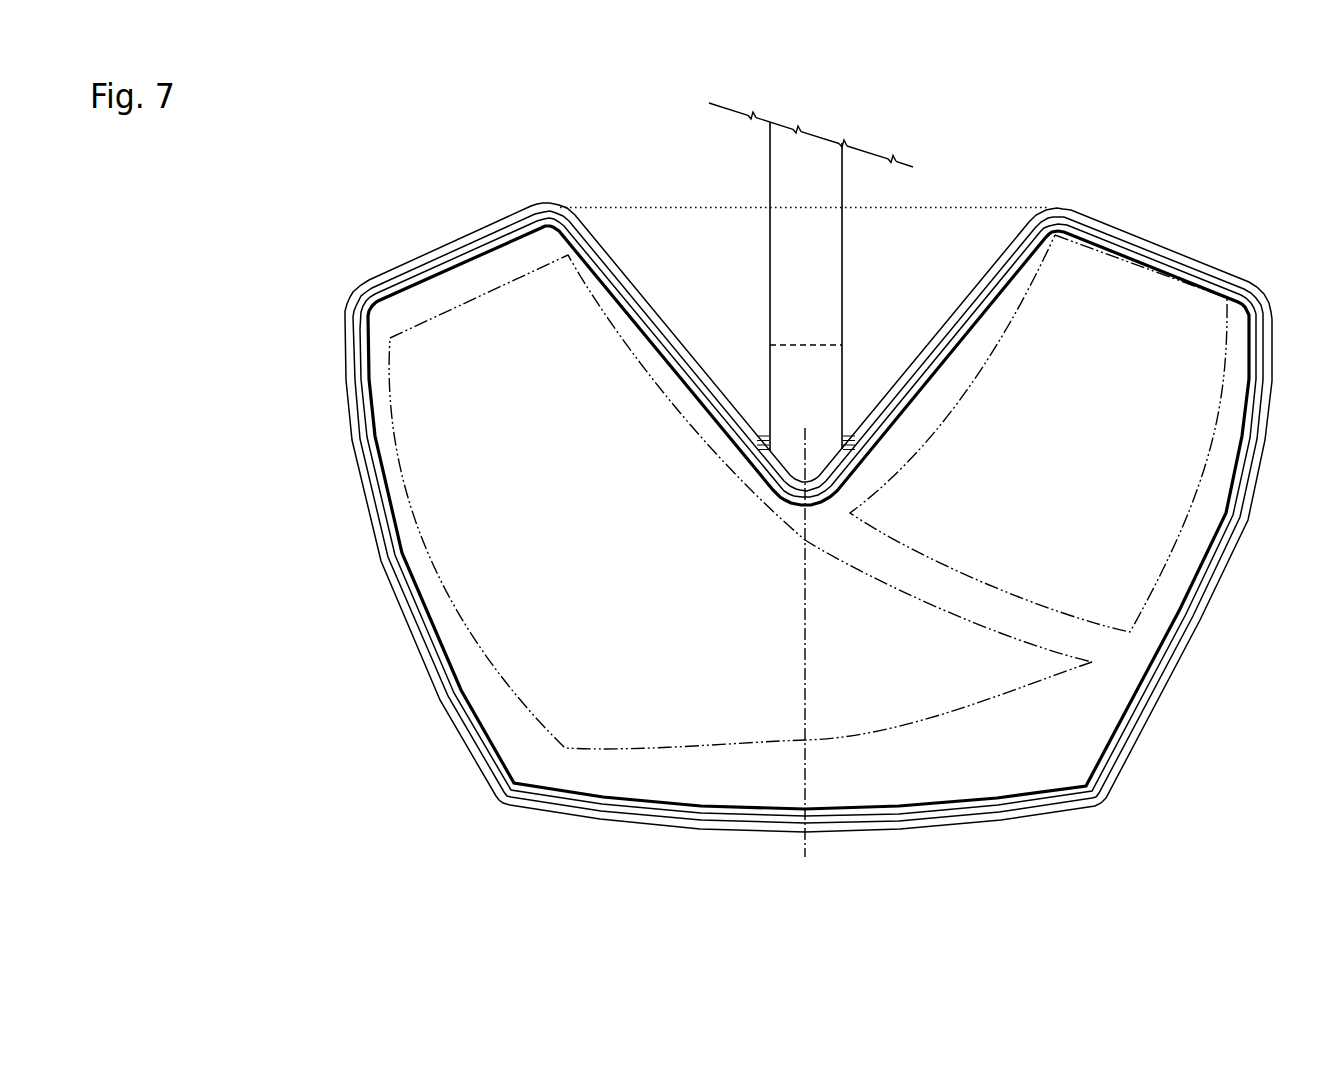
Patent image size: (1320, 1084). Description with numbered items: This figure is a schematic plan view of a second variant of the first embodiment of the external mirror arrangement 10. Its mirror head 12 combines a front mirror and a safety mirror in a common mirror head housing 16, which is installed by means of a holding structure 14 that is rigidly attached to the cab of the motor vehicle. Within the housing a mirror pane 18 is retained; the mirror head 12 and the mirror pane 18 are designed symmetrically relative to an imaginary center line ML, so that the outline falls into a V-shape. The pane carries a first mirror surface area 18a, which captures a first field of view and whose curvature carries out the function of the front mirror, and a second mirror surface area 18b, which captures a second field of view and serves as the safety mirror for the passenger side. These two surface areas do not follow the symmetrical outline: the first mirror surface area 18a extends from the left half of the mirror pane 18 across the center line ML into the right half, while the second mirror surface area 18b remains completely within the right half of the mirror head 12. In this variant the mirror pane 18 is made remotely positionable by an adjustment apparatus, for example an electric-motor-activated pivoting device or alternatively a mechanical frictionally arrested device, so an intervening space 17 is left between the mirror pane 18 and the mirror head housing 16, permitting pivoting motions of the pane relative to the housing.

The external mirror arrangement 10 is at (424, 810).
The mirror head 12 is at (898, 832).
The holding structure 14 is at (842, 273).
The mirror head housing 16 is at (1025, 817).
The intervening space 17 is at (1093, 783).
The mirror pane 18 is at (463, 650).
The first mirror surface area 18a is at (653, 713).
The second mirror surface area 18b is at (1157, 548).
The center line ML is at (802, 775).